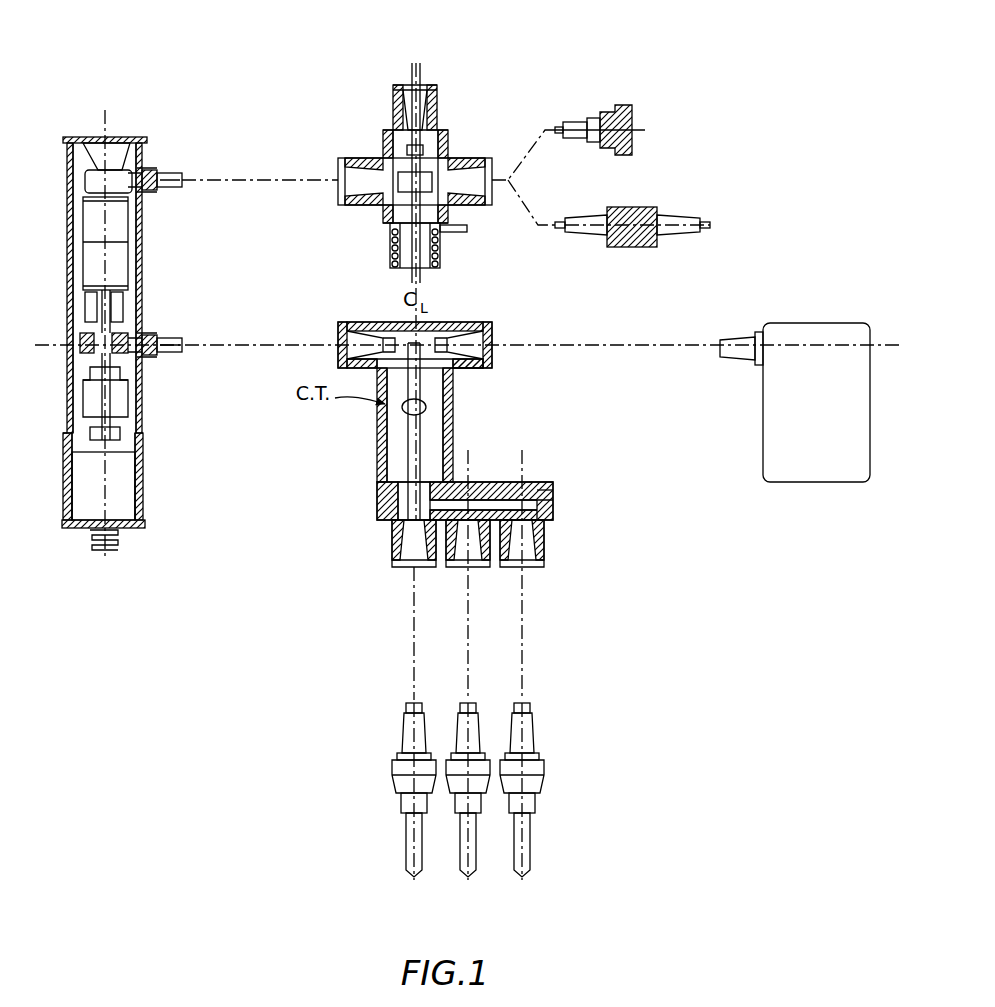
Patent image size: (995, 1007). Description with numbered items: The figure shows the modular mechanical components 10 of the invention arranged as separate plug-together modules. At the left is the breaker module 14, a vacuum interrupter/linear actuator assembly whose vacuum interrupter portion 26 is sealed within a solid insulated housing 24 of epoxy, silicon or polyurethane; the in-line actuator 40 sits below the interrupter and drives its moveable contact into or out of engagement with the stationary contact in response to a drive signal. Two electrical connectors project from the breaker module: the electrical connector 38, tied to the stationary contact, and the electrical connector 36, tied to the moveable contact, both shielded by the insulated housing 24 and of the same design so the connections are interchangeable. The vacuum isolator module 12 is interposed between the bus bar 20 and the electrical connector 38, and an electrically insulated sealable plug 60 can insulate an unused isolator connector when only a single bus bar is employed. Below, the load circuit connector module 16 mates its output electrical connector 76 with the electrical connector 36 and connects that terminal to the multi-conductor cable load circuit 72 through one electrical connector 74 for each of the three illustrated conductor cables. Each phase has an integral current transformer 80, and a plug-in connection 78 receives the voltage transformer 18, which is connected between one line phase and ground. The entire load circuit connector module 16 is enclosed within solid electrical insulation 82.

The modular mechanical components 10 is at (560, 44).
The vacuum isolator module 12 is at (455, 128).
The breaker module 14 is at (155, 260).
The load circuit connector module 16 is at (462, 404).
The voltage transformer 18 is at (762, 432).
The bus bar 20 is at (633, 247).
The insulated housing 24 is at (140, 412).
The vacuum interrupter portion 26 is at (115, 224).
The electrical connector 36 is at (186, 340).
The electrical connector 38 is at (183, 178).
The in-line actuator 40 is at (128, 476).
The insulated sealable plug 60 is at (628, 110).
The multi-conductor cable load circuit 72 is at (547, 708).
The electrical connector 74 is at (408, 543).
The output electrical connector 76 is at (338, 338).
The plug-in connection 78 is at (488, 338).
The current transformer 80 is at (408, 435).
The solid electrical insulation 82 is at (507, 482).